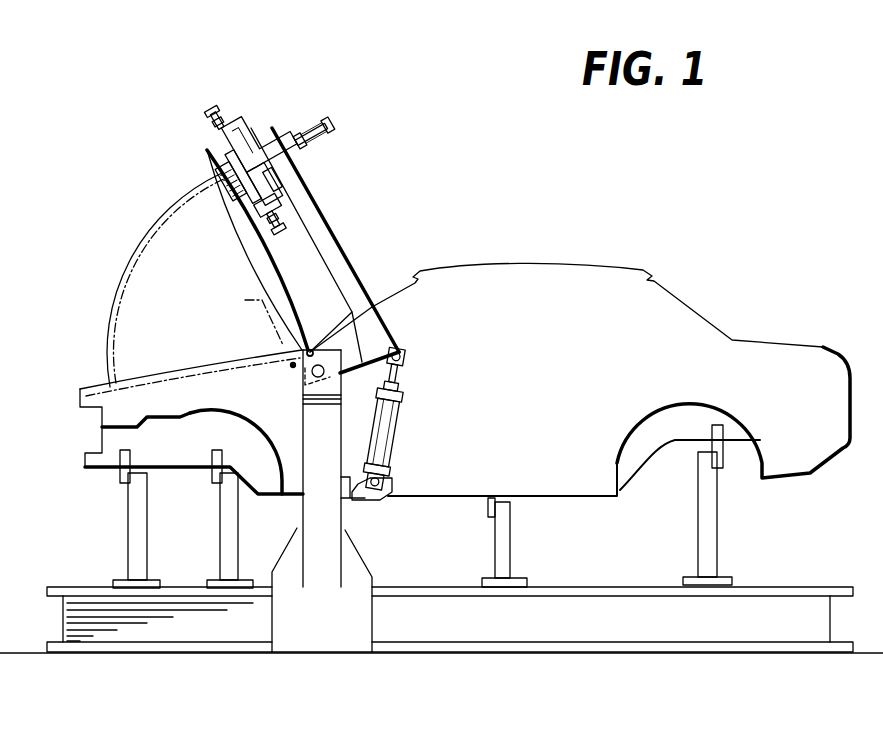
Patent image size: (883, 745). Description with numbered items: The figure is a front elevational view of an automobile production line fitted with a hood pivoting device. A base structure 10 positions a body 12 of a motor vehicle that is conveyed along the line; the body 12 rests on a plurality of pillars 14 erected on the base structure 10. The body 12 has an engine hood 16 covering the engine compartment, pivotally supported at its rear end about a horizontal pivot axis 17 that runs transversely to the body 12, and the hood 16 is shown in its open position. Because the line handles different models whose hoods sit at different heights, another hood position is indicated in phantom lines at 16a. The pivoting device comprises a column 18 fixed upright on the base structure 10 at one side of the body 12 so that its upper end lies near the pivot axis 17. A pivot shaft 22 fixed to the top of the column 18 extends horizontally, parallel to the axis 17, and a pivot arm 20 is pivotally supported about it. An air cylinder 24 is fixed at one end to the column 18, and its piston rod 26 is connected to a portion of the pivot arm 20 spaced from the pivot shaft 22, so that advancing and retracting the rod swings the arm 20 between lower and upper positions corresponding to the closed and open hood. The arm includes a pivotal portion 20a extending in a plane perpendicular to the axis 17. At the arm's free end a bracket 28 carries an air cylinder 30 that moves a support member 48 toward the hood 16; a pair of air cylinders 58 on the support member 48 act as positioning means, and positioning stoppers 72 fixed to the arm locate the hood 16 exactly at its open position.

The base structure 10 is at (627, 590).
The body of a motor vehicle 12 is at (628, 283).
The pillars 14 is at (136, 534).
The engine hood 16 is at (280, 277).
The engine hood of a different model 16a is at (245, 300).
The pivot axis 17 is at (311, 350).
The column 18 is at (325, 515).
The pivot arm 20 is at (384, 264).
The pivotal portion 20a is at (337, 253).
The pivot shaft 22 is at (313, 374).
The air cylinder 24 is at (384, 430).
The piston rod 26 is at (402, 372).
The bracket 28 is at (287, 140).
The air cylinder 30 is at (333, 126).
The support member 48 is at (300, 190).
The air cylinders 58 is at (211, 111).
The positioning stoppers 72 is at (243, 223).